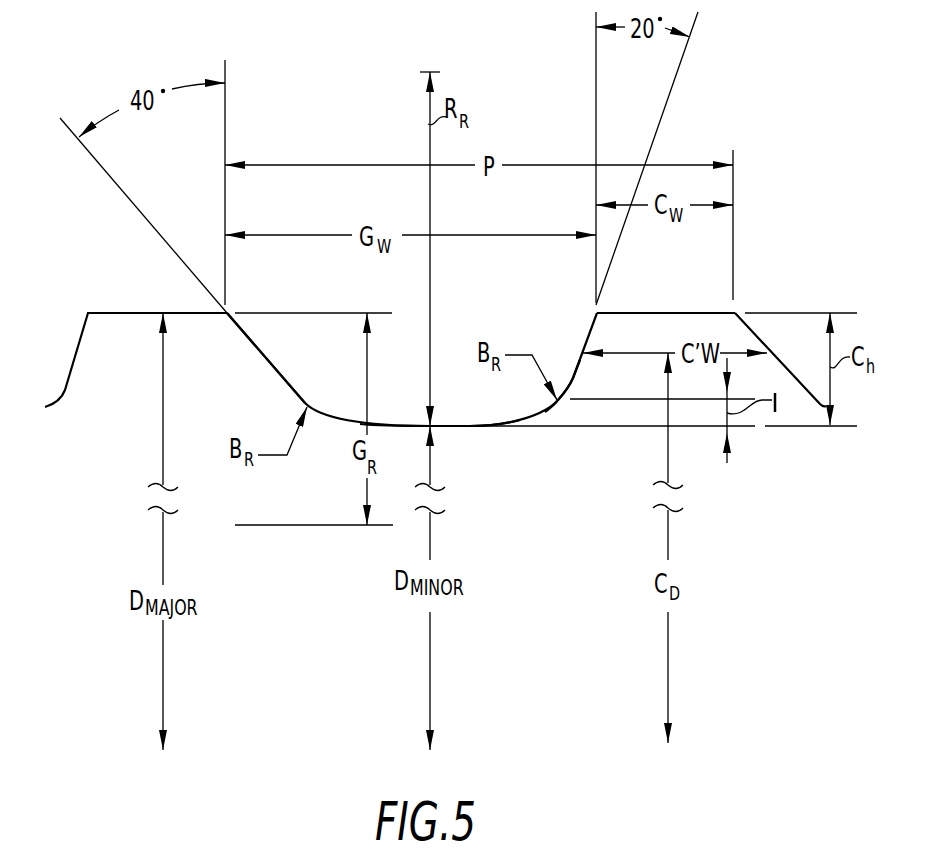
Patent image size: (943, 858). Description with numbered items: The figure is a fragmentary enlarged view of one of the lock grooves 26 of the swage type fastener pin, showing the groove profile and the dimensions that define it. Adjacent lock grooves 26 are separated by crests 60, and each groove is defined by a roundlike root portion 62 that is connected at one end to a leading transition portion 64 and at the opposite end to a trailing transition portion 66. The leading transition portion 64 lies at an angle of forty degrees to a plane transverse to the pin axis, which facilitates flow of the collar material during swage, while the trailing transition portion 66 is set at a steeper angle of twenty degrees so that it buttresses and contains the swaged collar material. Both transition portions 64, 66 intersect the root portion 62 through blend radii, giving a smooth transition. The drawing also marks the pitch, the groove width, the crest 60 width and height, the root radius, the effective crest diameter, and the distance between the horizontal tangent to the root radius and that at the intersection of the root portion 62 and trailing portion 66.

The lock groove 26 is at (452, 362).
The crest 60 is at (648, 305).
The root portion 62 is at (440, 432).
The leading transition portion 64 is at (248, 347).
The trailing transition portion 66 is at (576, 385).